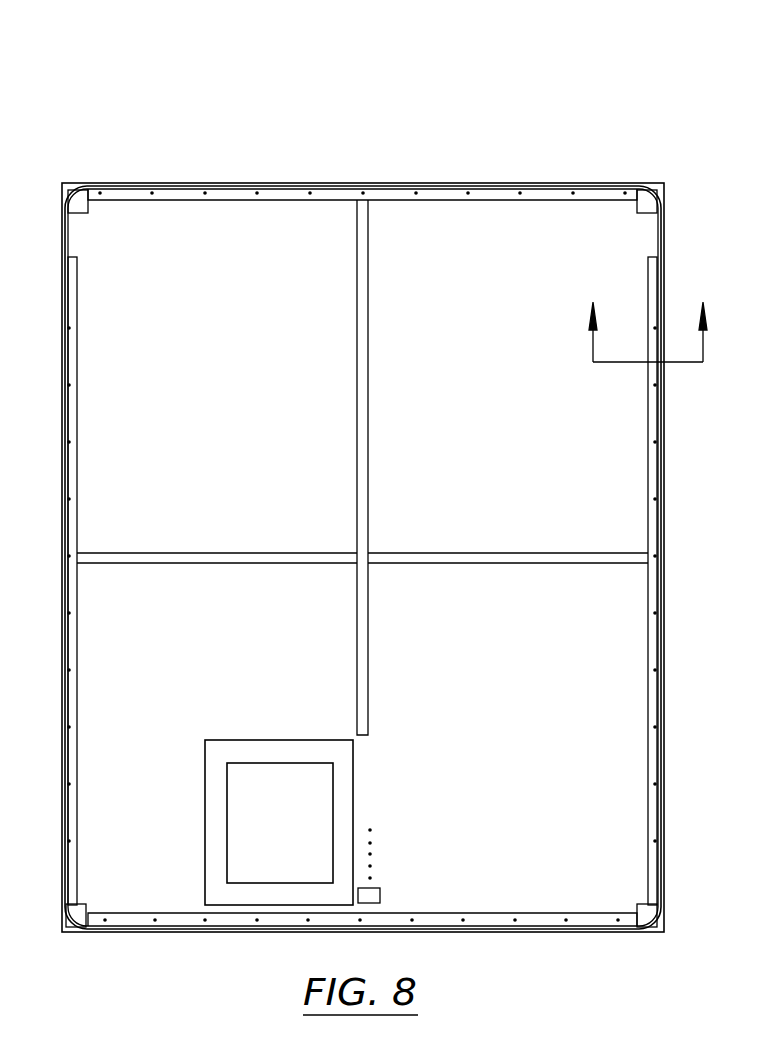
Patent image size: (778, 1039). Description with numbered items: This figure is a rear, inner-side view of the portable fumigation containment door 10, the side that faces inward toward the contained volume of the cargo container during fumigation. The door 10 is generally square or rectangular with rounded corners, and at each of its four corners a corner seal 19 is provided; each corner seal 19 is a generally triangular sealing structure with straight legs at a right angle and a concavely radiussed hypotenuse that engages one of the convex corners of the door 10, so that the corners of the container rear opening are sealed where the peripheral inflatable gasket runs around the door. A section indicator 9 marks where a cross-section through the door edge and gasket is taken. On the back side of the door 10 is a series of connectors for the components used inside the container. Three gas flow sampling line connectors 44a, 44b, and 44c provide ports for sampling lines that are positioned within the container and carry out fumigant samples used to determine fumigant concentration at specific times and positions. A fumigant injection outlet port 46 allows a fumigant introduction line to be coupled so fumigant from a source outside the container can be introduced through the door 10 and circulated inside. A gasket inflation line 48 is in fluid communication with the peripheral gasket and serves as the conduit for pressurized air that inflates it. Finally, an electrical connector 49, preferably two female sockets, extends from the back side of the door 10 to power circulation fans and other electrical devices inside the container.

The portable fumigation containment door 10 is at (587, 107).
The corner seal 19 is at (63, 198).
The section line of FIG. 9 is at (648, 317).
The gas flow sampling line connector 44a is at (370, 830).
The gas flow sampling line connector 44b is at (370, 843).
The gas flow sampling line connector 44c is at (370, 854).
The fumigant injection outlet port 46 is at (370, 866).
The gasket inflation line 48 is at (370, 878).
The electrical connector 49 is at (380, 895).